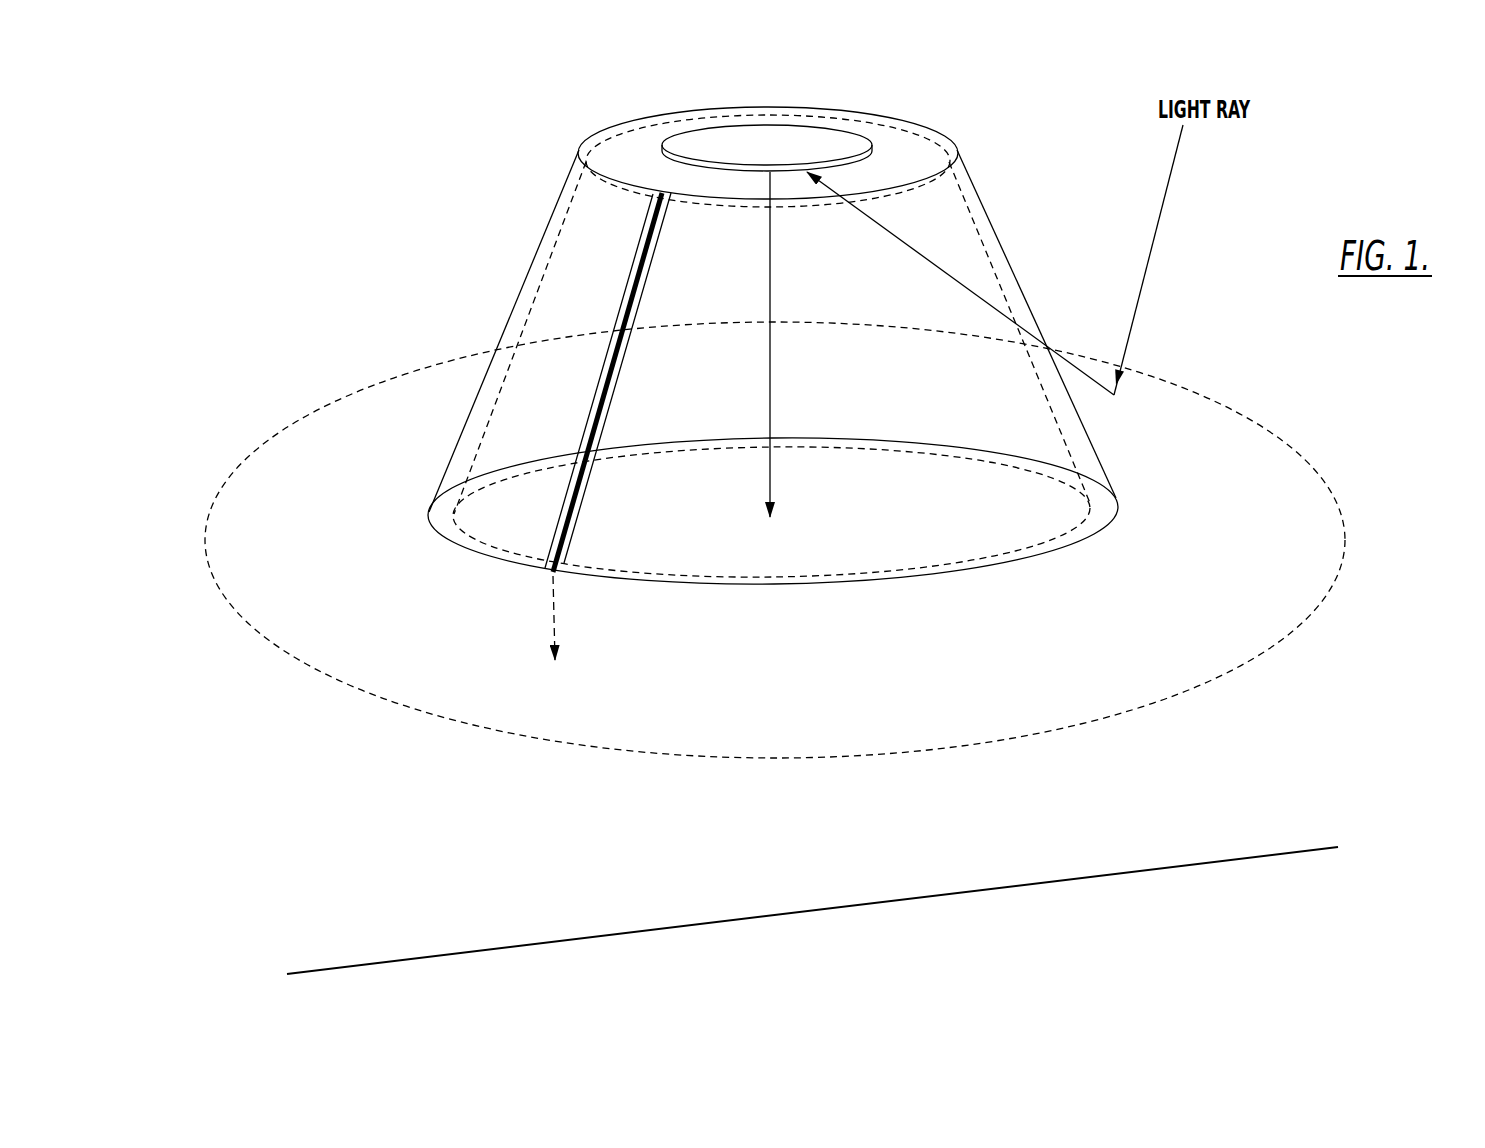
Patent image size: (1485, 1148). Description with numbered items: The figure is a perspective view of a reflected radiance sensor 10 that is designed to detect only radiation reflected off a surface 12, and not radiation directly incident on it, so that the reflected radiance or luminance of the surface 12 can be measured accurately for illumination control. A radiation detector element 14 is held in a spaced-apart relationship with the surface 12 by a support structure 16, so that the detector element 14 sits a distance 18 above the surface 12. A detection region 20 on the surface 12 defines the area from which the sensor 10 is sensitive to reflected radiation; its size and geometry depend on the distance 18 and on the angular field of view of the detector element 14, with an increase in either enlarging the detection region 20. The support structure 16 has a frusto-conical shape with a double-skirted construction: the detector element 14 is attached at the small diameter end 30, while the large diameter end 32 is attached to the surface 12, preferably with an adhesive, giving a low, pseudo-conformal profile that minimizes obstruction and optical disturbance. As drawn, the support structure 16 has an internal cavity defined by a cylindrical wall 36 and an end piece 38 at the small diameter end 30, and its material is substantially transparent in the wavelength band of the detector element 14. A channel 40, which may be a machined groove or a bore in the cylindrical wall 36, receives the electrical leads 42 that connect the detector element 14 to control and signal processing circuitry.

The reflected radiance sensor 10 is at (310, 252).
The surface 12 is at (659, 882).
The radiation detector element 14 is at (768, 143).
The support structure 16 is at (1045, 257).
The distance 18 is at (771, 403).
The detection region 20 is at (1218, 653).
The small diameter end 30 is at (975, 143).
The large diameter end 32 is at (1127, 500).
The cylindrical wall 36 is at (515, 303).
The end piece 38 is at (612, 152).
The channel 40 is at (608, 417).
The electrical leads 42 is at (588, 432).